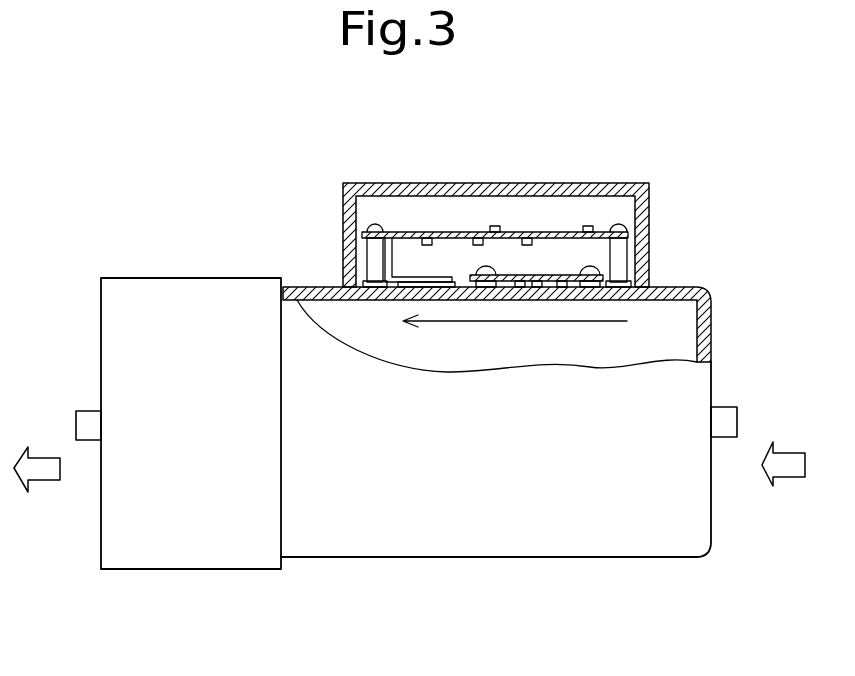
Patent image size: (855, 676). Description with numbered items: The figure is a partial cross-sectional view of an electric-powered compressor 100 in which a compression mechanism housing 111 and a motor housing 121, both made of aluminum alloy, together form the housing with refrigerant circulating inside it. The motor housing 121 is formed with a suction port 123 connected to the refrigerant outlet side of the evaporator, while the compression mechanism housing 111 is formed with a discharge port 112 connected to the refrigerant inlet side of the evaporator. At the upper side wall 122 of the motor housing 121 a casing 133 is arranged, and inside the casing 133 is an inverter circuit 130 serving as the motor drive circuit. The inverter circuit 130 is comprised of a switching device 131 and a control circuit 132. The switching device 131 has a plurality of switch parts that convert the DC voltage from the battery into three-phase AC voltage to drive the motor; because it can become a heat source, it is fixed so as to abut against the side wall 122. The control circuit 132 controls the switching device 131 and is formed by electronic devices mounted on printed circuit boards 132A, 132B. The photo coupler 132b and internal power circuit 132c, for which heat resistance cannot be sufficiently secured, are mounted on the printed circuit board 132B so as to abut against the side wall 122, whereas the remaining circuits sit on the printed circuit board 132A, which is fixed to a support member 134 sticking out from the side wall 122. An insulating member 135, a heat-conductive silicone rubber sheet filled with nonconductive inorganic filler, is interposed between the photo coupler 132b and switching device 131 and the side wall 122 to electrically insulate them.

The sensor device 100 is at (266, 247).
The compression mechanism housing 111 is at (193, 559).
The discharge port 112 is at (85, 420).
The motor housing 121 is at (458, 546).
The side wall 122 is at (677, 286).
The suction port 123 is at (725, 418).
The inverter circuit 130 is at (487, 127).
The switching device 131 is at (414, 276).
The control circuit 132 is at (461, 216).
The printed circuit board 132A is at (508, 254).
The printed circuit board 132B is at (563, 281).
The photo coupler 132b is at (533, 288).
The internal power circuit 132c is at (565, 288).
The casing 133 is at (645, 203).
The support member 134 is at (373, 260).
The insulating member 135 is at (512, 288).